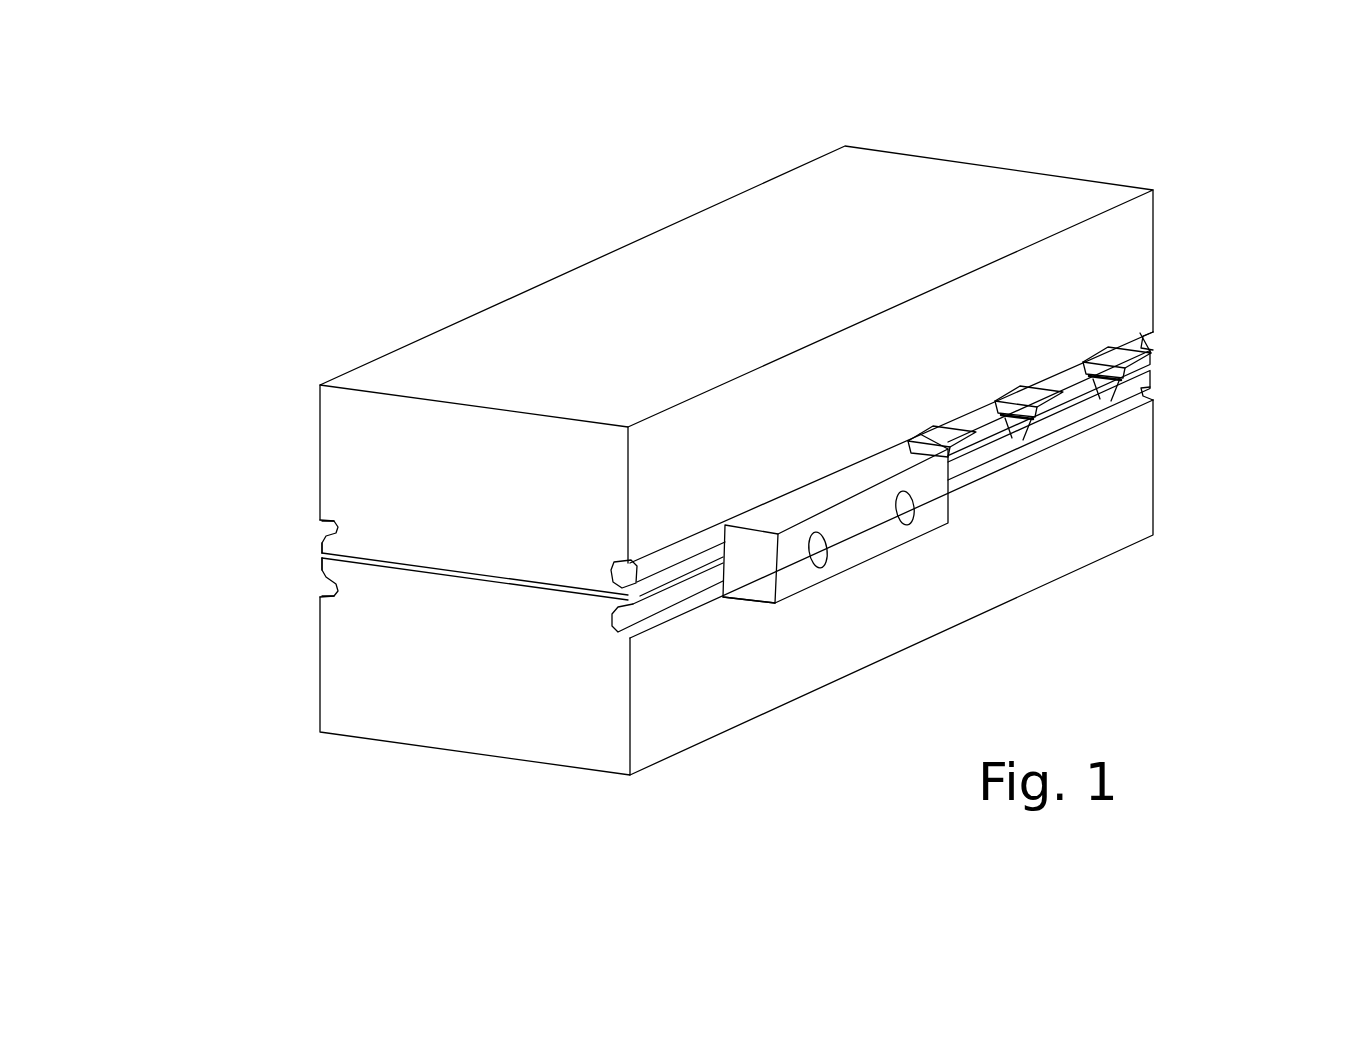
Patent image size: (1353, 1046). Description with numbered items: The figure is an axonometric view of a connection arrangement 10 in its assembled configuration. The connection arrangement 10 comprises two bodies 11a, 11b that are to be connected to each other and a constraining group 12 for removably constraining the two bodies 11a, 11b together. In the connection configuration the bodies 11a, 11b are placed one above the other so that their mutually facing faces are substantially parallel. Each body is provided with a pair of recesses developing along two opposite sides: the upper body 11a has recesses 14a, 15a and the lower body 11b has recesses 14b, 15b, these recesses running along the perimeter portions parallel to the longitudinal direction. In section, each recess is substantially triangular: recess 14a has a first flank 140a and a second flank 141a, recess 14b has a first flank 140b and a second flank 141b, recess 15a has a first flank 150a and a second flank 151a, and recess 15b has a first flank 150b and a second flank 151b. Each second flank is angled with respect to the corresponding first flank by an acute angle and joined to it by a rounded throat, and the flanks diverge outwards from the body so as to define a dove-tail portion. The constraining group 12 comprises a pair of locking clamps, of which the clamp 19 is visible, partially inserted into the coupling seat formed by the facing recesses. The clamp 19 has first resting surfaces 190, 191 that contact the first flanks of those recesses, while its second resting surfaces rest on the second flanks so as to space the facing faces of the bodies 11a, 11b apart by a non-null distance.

The connection arrangement 10 is at (362, 184).
The body 11a is at (1110, 173).
The body 11b is at (1160, 530).
The constraining group 12 is at (878, 566).
The recess 14a is at (306, 532).
The recess 14b is at (303, 591).
The first flank 140a is at (322, 527).
The first flank 140b is at (318, 600).
The second flank 141a is at (320, 543).
The second flank 141b is at (320, 577).
The recess 15a is at (1158, 329).
The recess 15b is at (1158, 389).
The first flank 150a is at (642, 568).
The first flank 150b is at (1147, 400).
The second flank 151a is at (616, 566).
The second flank 151b is at (1151, 387).
The locking clamp 19 is at (928, 523).
The first resting surface 190 is at (780, 512).
The first resting surface 191 is at (735, 600).